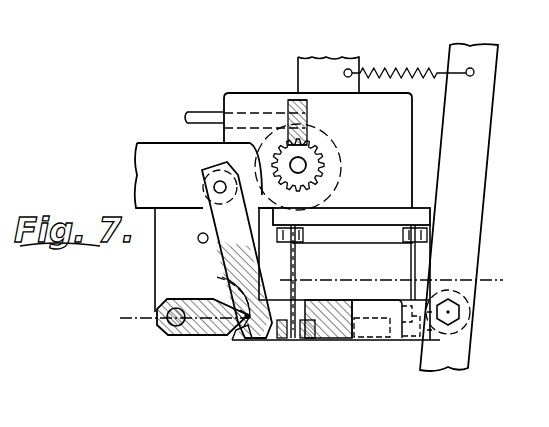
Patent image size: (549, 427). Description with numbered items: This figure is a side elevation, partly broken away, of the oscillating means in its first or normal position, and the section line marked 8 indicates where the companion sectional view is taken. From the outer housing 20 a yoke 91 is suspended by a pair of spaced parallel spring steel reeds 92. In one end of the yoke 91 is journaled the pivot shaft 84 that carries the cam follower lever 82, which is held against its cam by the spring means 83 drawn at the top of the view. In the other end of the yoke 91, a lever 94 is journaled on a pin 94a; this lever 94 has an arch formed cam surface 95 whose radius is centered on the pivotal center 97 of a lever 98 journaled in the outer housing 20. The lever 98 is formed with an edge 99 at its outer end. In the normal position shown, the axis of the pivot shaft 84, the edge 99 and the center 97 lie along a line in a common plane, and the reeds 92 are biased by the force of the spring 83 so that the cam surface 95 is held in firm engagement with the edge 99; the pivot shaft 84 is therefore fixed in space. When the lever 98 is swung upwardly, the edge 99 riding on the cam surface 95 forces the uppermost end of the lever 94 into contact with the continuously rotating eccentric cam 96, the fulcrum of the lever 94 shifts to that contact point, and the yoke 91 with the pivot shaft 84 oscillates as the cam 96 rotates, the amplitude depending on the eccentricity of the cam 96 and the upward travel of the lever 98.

The outer housing 20 is at (388, 207).
The cam follower lever 82 is at (478, 158).
The spring means 83 is at (420, 56).
The pivot shaft 84 is at (450, 302).
The yoke 91 is at (375, 332).
The spring steel reeds 92 is at (307, 262).
The lever 94 is at (202, 189).
The pin 94a is at (237, 298).
The cam surface 95 is at (249, 342).
The eccentric cam 96 is at (345, 156).
The pivotal center 97 is at (173, 337).
The lever 98 is at (210, 337).
The edge 99 is at (243, 342).
The section line 8- 8 is at (129, 302).